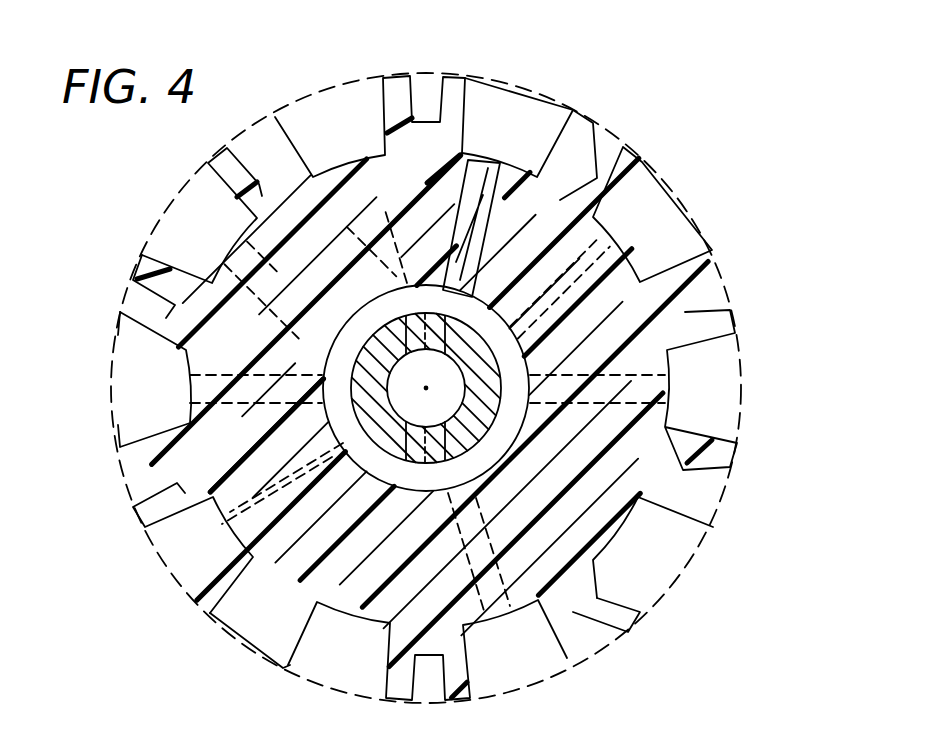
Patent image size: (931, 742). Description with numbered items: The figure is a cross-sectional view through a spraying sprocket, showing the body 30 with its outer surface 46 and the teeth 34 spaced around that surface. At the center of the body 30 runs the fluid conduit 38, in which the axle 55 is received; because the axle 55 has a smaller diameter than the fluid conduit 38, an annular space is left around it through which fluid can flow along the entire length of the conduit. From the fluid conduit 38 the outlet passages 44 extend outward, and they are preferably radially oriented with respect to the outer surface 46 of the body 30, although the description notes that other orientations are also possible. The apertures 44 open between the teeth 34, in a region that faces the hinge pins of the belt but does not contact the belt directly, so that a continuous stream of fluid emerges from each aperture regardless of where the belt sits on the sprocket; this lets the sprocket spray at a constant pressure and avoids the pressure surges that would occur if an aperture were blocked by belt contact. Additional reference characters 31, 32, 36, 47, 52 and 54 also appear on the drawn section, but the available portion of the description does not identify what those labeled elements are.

The body 30 is at (625, 273).
The rotor outer periphery 31 is at (518, 82).
The pole tooth 32 is at (598, 125).
The teeth 34 is at (625, 192).
The lamination edge 36 is at (633, 153).
The fluid conduit 38 is at (477, 463).
The outlet passages 44 is at (390, 137).
The outer surface 46 is at (530, 128).
The tie rod 47 is at (483, 150).
The shaft bore 52 is at (363, 404).
The lamination stack 54 is at (373, 297).
The axle 55 is at (340, 413).